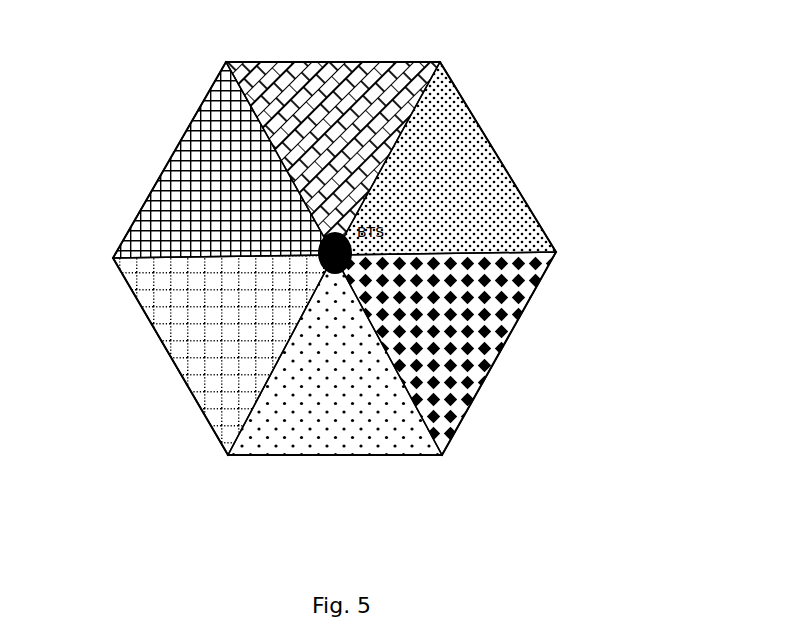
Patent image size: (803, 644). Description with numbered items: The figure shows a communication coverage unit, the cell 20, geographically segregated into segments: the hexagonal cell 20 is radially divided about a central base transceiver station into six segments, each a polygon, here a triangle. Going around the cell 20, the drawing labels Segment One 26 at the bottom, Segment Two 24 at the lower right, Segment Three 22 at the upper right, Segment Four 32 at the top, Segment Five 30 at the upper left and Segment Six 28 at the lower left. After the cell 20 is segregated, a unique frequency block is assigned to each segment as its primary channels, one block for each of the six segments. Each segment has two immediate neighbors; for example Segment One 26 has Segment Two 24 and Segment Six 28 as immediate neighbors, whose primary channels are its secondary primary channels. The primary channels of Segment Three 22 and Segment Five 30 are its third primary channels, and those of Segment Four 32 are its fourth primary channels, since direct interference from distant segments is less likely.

The cell divided into segments 20 is at (673, 138).
The segment 3 22 is at (530, 208).
The segment 2 24 is at (530, 312).
The segment 1 26 is at (260, 473).
The segment 6 28 is at (130, 280).
The segment 5 30 is at (210, 98).
The segment 4 32 is at (410, 60).